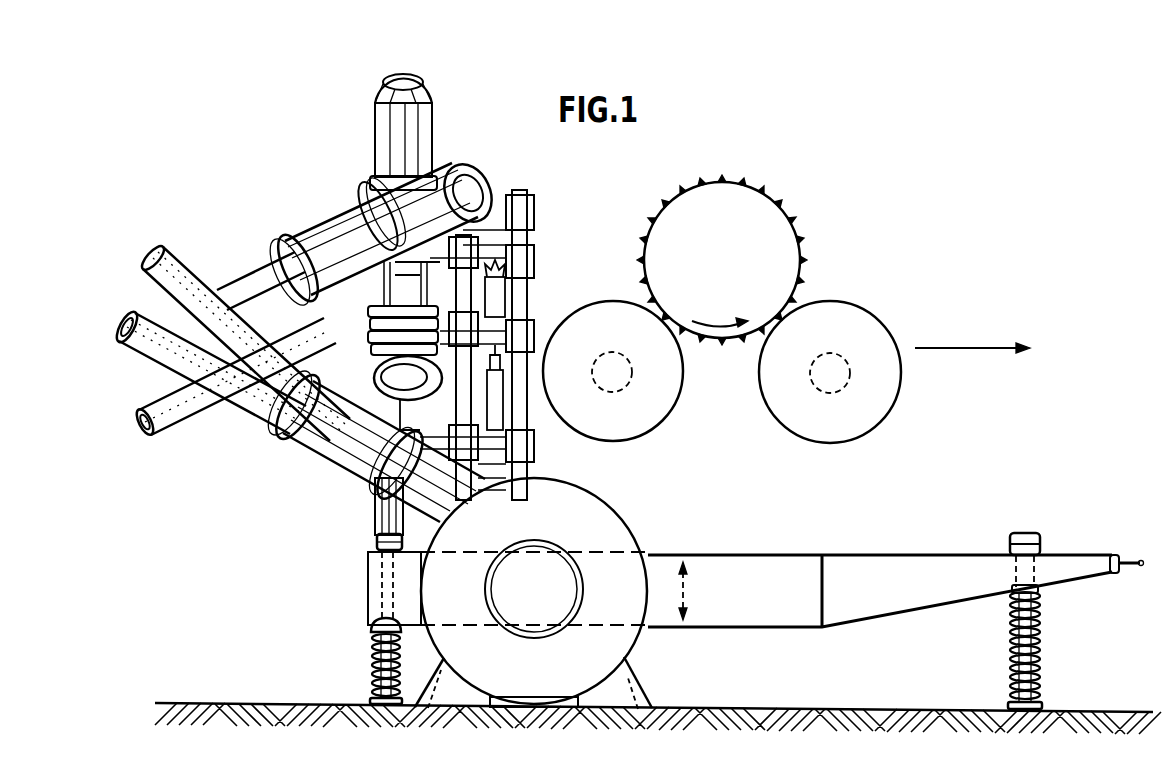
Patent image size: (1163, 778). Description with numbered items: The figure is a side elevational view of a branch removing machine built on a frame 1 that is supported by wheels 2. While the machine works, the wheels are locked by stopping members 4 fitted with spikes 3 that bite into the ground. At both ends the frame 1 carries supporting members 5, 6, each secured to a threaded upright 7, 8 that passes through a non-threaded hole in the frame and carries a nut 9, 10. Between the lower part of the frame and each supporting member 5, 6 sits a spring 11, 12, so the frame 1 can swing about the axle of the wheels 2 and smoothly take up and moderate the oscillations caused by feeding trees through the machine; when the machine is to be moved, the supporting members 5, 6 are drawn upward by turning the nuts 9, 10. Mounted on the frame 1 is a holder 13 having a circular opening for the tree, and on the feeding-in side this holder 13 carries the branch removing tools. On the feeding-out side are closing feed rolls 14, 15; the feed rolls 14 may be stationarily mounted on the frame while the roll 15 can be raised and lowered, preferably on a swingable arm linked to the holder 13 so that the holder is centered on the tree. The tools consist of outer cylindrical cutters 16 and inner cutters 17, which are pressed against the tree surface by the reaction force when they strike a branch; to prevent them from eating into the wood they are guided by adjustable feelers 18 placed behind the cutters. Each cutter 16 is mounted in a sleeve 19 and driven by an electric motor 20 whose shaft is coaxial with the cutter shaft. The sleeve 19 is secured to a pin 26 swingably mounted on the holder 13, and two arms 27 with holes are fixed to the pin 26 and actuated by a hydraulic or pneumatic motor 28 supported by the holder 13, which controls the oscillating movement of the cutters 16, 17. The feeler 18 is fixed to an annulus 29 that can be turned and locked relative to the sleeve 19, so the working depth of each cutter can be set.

The frame 1 is at (767, 568).
The wheels 2 is at (620, 637).
The spikes 3 is at (432, 702).
The stopping members 4 is at (440, 665).
The supporting member 5 is at (1042, 705).
The supporting member 6 is at (371, 700).
The threaded upright 7 is at (1040, 607).
The threaded upright 8 is at (371, 632).
The nut 9 is at (1040, 543).
The nut 10 is at (376, 541).
The spring 11 is at (1040, 635).
The spring 12 is at (372, 656).
The holder 13 is at (498, 272).
The feed rolls 14 is at (671, 392).
The feed roll 15 is at (773, 230).
The outer cylindrical cutters 16 is at (143, 277).
The inner cutters 17 is at (372, 292).
The adjustable feeler 18 is at (177, 273).
The sleeve 19 is at (330, 230).
The electric motor 20 is at (415, 93).
The pin 26 is at (416, 262).
The arms 27 is at (495, 318).
The hydraulic or pneumatic motor 28 is at (507, 298).
The annulus 29 is at (281, 258).